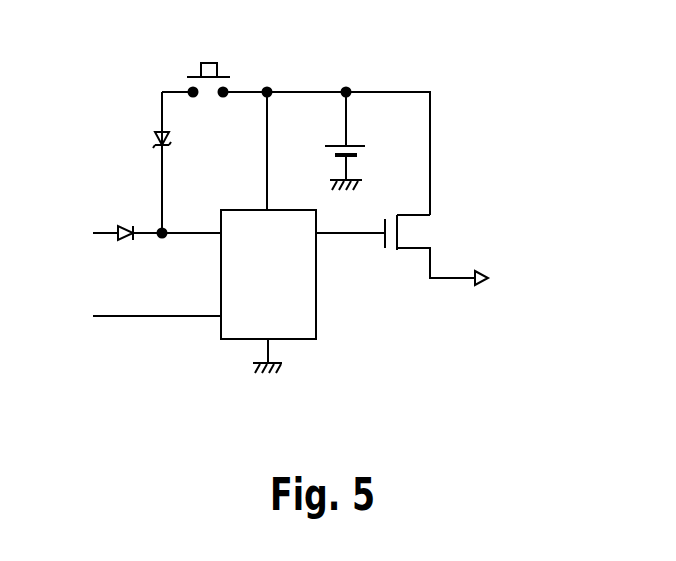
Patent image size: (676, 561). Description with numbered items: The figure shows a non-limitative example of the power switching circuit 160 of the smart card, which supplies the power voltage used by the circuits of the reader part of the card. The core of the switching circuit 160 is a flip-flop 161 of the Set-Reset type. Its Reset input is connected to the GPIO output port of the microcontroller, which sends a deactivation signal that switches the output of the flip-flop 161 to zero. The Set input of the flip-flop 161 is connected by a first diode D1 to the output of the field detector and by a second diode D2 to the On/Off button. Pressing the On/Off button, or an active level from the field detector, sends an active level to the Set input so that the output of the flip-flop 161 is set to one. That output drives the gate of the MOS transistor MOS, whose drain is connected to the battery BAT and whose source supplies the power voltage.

The switching circuit 160 is at (303, 221).
The flip-flop 161 is at (308, 339).
The first diode D1 is at (126, 243).
The second diode D2 is at (153, 145).
The battery BAT is at (370, 141).
The MOS transistor MOS is at (385, 250).